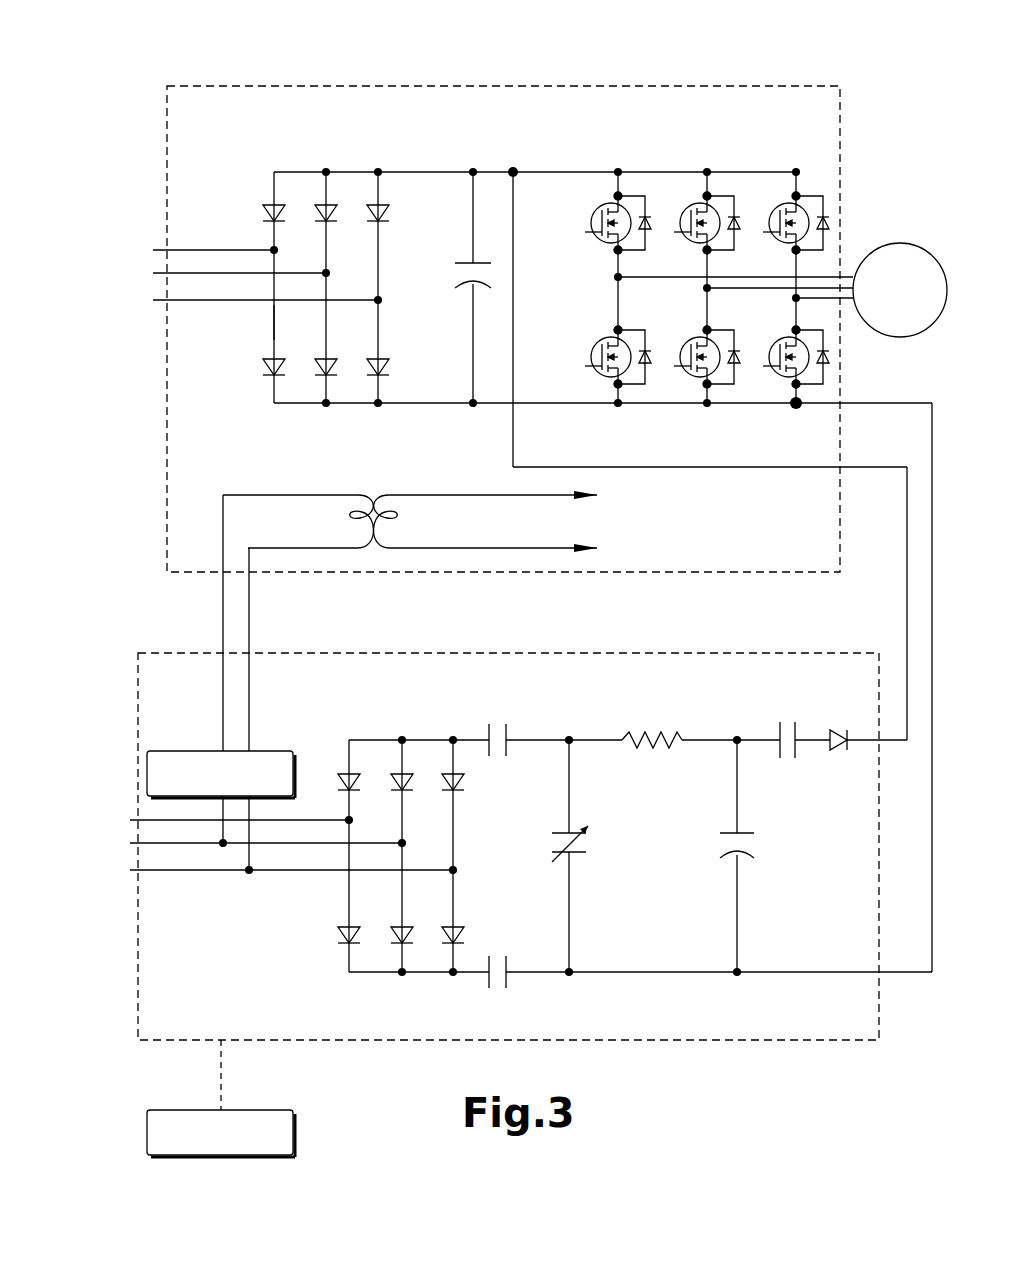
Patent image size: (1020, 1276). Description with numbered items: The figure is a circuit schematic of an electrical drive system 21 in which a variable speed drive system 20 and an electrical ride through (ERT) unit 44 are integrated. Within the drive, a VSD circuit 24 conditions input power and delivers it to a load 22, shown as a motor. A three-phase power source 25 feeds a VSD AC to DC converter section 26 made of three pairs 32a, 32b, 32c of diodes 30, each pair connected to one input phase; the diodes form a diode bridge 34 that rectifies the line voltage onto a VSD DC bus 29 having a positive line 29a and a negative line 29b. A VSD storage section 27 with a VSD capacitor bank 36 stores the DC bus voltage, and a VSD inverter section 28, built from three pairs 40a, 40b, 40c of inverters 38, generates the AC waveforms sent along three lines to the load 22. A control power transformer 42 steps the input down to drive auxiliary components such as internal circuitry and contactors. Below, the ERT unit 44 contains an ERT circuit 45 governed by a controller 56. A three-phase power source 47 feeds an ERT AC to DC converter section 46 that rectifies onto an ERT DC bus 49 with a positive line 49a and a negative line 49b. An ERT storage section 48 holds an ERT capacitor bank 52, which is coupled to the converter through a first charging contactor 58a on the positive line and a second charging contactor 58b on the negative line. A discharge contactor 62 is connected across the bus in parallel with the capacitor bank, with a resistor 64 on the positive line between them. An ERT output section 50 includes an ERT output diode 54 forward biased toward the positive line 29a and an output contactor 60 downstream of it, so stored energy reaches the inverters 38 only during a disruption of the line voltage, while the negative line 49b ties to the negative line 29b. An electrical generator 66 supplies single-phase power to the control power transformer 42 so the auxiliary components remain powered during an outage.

The variable speed drive system 20 is at (220, 86).
The electrical drive system 21 is at (103, 110).
The load 22 is at (896, 243).
The VSD circuit 24 is at (810, 178).
The power source 25 is at (103, 202).
The VSD AC to DC converter section 26 is at (392, 163).
The VSD storage section 27 is at (502, 163).
The VSD inverter section 28 is at (805, 163).
The VSD DC bus 29 is at (417, 172).
The positive line 29a is at (556, 172).
The negative line 29b is at (545, 405).
The diode 30 is at (268, 370).
The first pair of diodes 32a is at (266, 207).
The second pair of diodes 32b is at (318, 209).
The third pair of diodes 32c is at (390, 212).
The diode bridge 34 is at (268, 324).
The VSD capacitor bank 36 is at (470, 292).
The inverter 38 is at (590, 222).
The first pair of inverters 40a is at (597, 350).
The second pair of inverters 40b is at (688, 382).
The third pair of inverters 40c is at (772, 382).
The control power transformer 42 is at (372, 552).
The ERT unit 44 is at (161, 652).
The ERT circuit 45 is at (665, 977).
The ERT AC to DC converter section 46 is at (468, 718).
The power source 47 is at (88, 780).
The ERT storage section 48 is at (770, 718).
The ERT DC bus 49 is at (541, 975).
The positive line 49a is at (520, 740).
The negative line 49b is at (783, 975).
The ERT output section 50 is at (858, 718).
The ERT capacitor bank 52 is at (748, 856).
The ERT output diode 54 is at (831, 752).
The controller 56 is at (147, 1131).
The first charging contactor 58a is at (489, 724).
The second charging contactor 58b is at (507, 958).
The output contactor 60 is at (797, 760).
The discharge contactor 62 is at (562, 833).
The resistor 64 is at (650, 738).
The electrical generator 66 is at (284, 751).